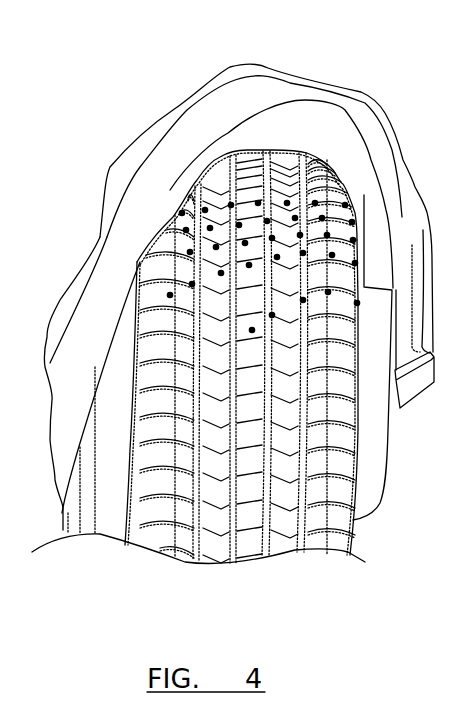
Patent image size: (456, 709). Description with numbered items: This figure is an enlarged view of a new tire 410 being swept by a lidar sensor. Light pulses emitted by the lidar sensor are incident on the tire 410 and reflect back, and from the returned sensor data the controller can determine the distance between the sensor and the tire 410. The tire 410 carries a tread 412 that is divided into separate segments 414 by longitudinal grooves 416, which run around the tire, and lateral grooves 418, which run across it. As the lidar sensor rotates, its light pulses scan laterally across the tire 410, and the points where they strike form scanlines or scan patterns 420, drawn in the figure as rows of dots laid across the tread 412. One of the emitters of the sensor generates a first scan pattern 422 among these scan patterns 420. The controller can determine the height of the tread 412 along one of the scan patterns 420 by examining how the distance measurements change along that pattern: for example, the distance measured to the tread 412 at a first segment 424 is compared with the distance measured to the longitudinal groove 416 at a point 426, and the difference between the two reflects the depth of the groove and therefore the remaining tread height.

The tire 410 is at (133, 128).
The tread 412 is at (153, 257).
The segments 414 is at (155, 352).
The longitudinal grooves 416 is at (195, 487).
The lateral grooves 418 is at (210, 529).
The scan patterns 420 is at (359, 322).
The first scan pattern 422 is at (229, 196).
The first segment 424 is at (287, 200).
The point 426 is at (296, 216).